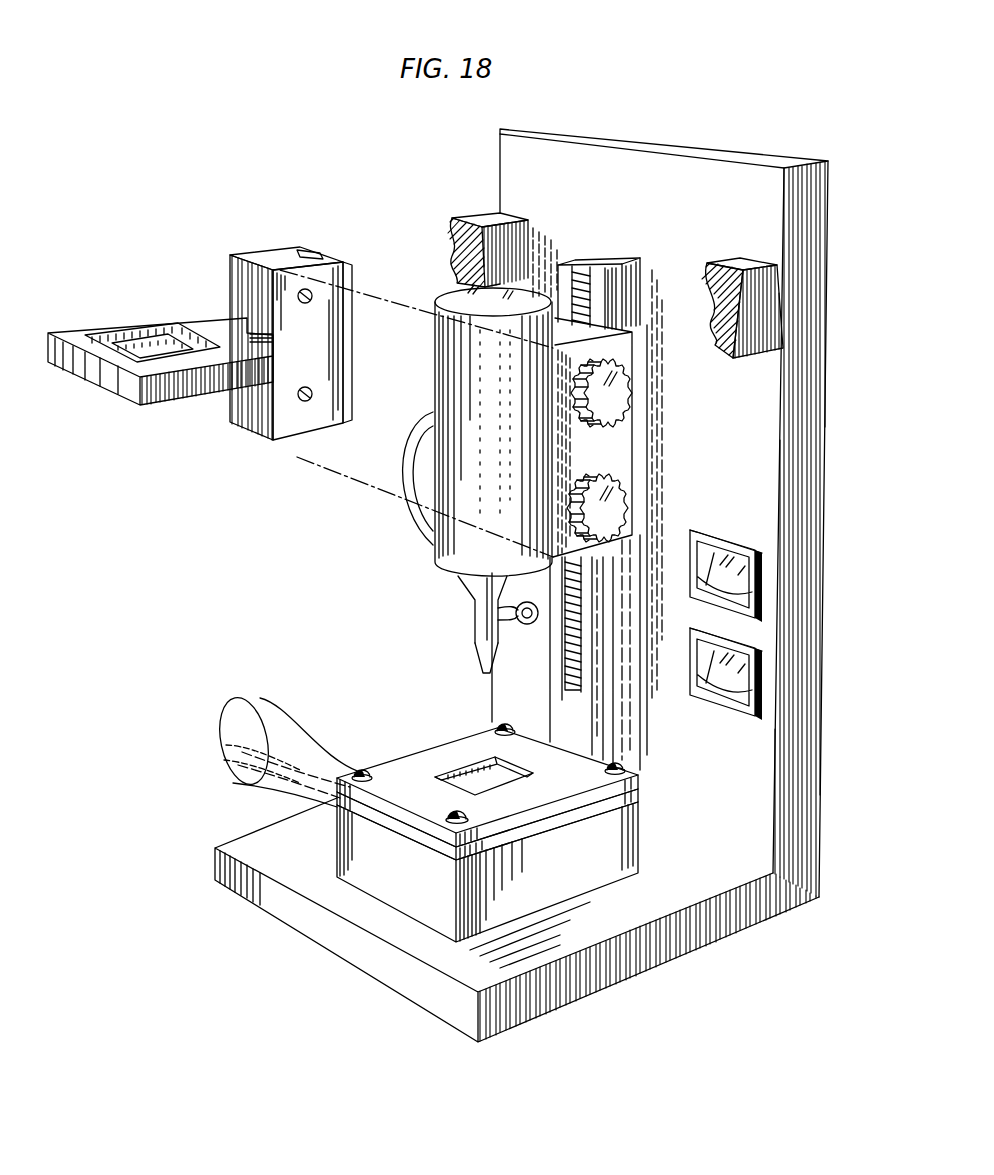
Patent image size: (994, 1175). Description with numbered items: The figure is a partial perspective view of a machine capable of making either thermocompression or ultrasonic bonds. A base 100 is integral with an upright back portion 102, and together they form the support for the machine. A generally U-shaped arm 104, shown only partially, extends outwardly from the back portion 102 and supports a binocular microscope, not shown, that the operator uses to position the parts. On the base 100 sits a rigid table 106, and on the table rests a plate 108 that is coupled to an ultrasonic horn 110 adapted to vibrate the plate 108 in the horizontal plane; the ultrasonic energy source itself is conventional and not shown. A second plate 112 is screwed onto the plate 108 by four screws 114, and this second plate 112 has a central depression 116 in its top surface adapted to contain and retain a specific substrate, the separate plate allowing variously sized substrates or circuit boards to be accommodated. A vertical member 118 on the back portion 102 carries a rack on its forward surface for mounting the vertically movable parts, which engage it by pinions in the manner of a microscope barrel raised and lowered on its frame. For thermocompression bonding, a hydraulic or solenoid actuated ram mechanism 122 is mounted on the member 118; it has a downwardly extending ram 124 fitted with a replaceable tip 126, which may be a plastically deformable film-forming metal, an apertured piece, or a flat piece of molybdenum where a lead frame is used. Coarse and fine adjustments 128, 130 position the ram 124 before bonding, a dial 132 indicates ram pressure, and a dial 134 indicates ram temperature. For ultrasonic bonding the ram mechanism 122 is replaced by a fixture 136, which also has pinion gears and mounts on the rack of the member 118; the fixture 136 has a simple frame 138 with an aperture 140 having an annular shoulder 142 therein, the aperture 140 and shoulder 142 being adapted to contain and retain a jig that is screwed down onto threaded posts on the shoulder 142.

The base 100 is at (300, 897).
The back portion 102 is at (708, 165).
The U-shaped arm 104 is at (480, 217).
The rigid table 106 is at (640, 855).
The plate 108 is at (640, 795).
The ultrasonic horn 110 is at (232, 782).
The second plate 112 is at (433, 760).
The screws 114 is at (500, 727).
The central depression 116 is at (517, 770).
The member 118 is at (603, 263).
The ram mechanism 122 is at (443, 545).
The ram 124 is at (480, 627).
The replaceable tip 126 is at (482, 657).
The coarse adjustment 128 is at (622, 417).
The fine adjustment 130 is at (622, 500).
The dial 132 is at (745, 545).
The dial 134 is at (728, 698).
The fixture 136 is at (250, 447).
The frame 138 is at (107, 358).
The aperture 140 is at (183, 337).
The annular shoulder 142 is at (152, 338).